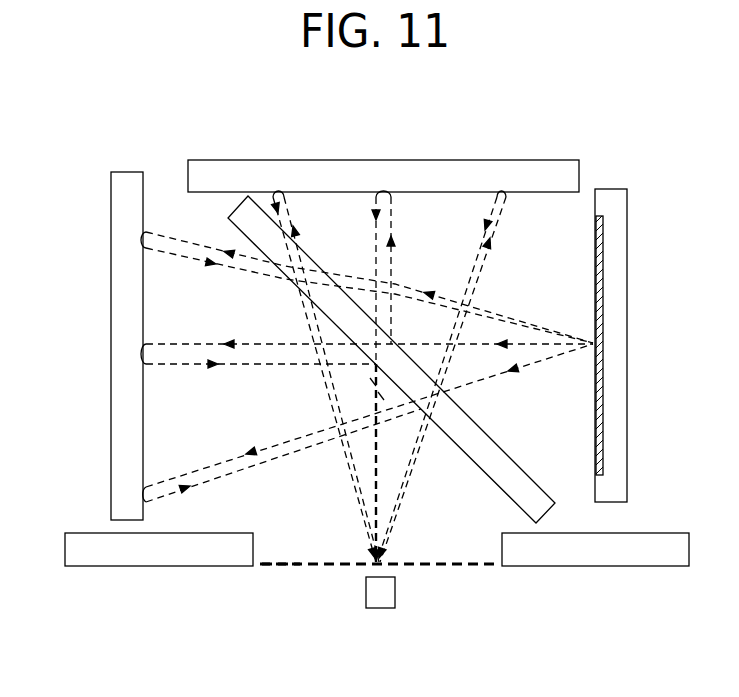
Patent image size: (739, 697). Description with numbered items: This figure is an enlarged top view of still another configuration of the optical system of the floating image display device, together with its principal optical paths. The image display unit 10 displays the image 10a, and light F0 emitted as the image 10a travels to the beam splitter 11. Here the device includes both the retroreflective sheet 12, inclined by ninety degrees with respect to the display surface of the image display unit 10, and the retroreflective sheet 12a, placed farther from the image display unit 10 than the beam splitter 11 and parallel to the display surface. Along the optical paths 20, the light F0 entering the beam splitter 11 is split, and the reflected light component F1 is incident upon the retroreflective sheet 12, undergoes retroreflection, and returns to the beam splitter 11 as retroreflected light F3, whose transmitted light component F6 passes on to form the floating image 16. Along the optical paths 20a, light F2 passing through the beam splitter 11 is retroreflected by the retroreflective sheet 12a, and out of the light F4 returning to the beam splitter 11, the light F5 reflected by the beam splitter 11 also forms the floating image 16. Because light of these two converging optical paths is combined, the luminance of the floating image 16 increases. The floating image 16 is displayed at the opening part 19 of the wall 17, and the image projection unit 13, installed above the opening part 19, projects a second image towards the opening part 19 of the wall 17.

The image display unit 10 is at (629, 300).
The image 10a is at (600, 255).
The beam splitter 11 is at (256, 216).
The retroreflective sheet 12 is at (388, 160).
The retroreflective sheet 12a is at (111, 322).
The image projection unit 13 is at (372, 600).
The floating image 16 is at (450, 572).
The wall 17 is at (160, 567).
The opening part 19 is at (288, 580).
The optical paths 20 is at (380, 397).
The optical paths 20a is at (373, 382).
The light F0 is at (500, 318).
The reflected light component F1 is at (498, 242).
The light F2 is at (146, 232).
The retroreflected light F3 is at (483, 228).
The light F4 is at (172, 250).
The light F5 is at (293, 297).
The transmitted light component F6 is at (403, 494).